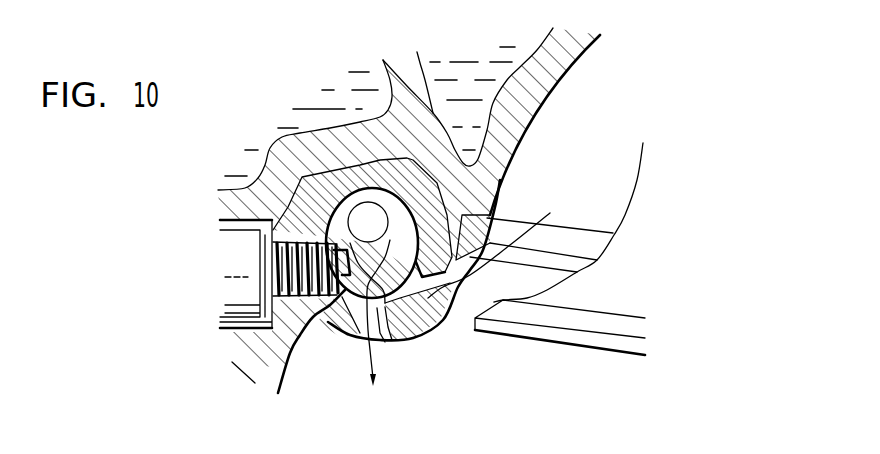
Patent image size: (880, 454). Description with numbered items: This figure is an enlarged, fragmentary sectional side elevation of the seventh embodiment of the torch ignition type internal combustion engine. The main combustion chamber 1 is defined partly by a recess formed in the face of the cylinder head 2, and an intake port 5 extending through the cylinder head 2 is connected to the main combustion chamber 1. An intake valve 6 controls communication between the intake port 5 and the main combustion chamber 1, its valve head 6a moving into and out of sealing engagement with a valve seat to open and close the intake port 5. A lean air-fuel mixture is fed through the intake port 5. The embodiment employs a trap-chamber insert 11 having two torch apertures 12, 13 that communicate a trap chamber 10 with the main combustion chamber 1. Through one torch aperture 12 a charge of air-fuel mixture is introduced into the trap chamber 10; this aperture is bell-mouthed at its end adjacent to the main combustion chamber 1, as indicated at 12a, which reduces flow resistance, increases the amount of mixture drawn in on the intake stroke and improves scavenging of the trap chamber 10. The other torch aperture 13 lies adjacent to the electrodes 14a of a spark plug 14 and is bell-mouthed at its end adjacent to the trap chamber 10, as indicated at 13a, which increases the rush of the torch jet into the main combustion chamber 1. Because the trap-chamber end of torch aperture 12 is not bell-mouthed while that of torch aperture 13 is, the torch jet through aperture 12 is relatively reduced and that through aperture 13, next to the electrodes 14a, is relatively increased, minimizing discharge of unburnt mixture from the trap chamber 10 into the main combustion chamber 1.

The main combustion chamber 1 is at (482, 371).
The cylinder head 2 is at (263, 180).
The intake port 5 is at (578, 183).
The intake valve 6 is at (613, 258).
The valve head 6a is at (570, 337).
The trap chamber 10 is at (380, 240).
The trap-chamber insert 11 is at (413, 327).
The torch aperture 12 is at (425, 302).
The bell-mouthed end 12a is at (414, 313).
The torch aperture 13 is at (362, 338).
The bell-mouthed end 13a is at (388, 338).
The spark plug 14 is at (230, 287).
The electrodes 14a is at (348, 290).